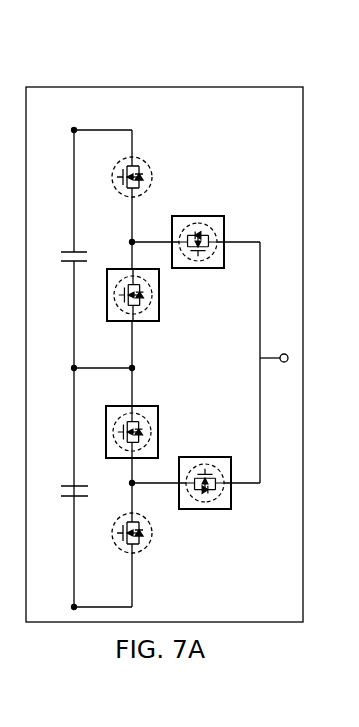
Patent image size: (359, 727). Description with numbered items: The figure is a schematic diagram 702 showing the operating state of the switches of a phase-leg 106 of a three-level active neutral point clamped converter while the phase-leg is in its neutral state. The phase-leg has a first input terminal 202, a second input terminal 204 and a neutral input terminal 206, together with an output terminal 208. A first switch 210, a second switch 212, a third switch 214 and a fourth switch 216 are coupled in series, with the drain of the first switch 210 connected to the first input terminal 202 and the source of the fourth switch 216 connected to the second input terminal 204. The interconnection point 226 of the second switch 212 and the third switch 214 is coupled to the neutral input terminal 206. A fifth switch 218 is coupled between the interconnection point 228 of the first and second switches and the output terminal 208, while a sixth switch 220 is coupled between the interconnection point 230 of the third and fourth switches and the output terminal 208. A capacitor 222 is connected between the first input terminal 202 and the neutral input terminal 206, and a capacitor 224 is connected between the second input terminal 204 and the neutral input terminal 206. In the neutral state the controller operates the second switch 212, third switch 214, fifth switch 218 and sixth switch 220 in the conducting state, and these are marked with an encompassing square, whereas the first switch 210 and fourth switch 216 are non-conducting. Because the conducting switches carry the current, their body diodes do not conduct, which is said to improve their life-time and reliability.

The schematic diagram 702 is at (218, 58).
The phase-leg 106 is at (303, 155).
The first input terminal 202 is at (73, 129).
The second input terminal 204 is at (73, 606).
The neutral input terminal 206 is at (72, 367).
The output terminal 208 is at (284, 353).
The first switch 210 is at (143, 161).
The second switch 212 is at (160, 305).
The third switch 214 is at (158, 420).
The fourth switch 216 is at (150, 541).
The fifth switch 218 is at (210, 216).
The sixth switch 220 is at (222, 457).
The capacitor 222 is at (59, 250).
The capacitor 224 is at (59, 485).
The interconnection point 226 is at (134, 370).
The interconnection point 228 is at (129, 241).
The interconnection point 230 is at (129, 482).